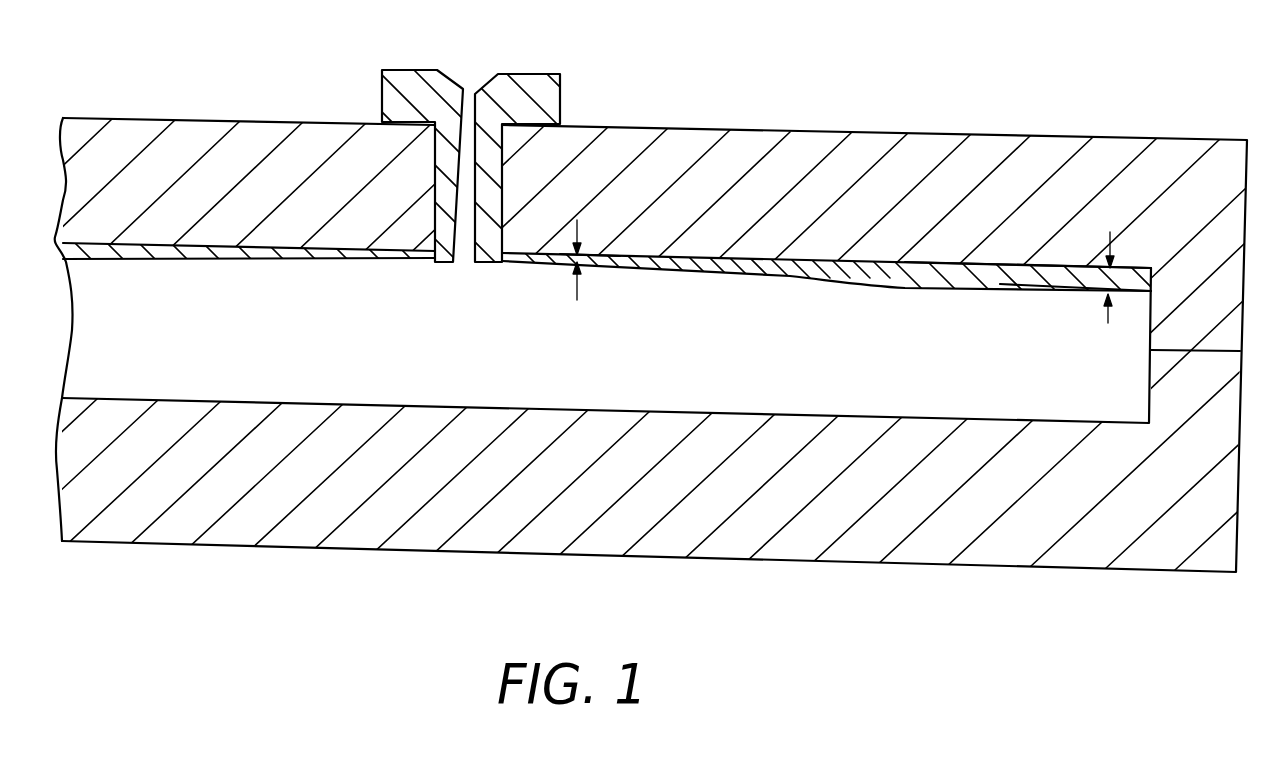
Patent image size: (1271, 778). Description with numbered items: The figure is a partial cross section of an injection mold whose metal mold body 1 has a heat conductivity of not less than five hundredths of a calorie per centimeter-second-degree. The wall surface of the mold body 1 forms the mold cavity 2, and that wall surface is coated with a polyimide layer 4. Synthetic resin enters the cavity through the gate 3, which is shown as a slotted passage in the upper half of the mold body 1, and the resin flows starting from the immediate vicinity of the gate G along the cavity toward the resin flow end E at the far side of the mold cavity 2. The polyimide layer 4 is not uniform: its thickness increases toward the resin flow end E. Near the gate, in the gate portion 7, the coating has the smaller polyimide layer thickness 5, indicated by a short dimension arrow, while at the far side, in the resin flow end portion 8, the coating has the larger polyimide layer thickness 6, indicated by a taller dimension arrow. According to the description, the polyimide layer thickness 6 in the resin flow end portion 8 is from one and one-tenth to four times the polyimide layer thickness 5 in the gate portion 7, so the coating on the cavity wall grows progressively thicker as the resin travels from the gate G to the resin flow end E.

The mold body 1 is at (800, 152).
The mold cavity 2 is at (875, 346).
The gate 3 is at (465, 248).
The immediate vicinity of gate G is at (513, 261).
The polyimide layer 4 is at (1000, 272).
The polyimide layer thickness in gate portion 5 is at (580, 258).
The polyimide layer thickness in resin flow end portion 6 is at (1113, 273).
The gate portion 7 is at (583, 262).
The resin flow end portion 8 is at (1103, 293).
The resin flow end E is at (1120, 300).